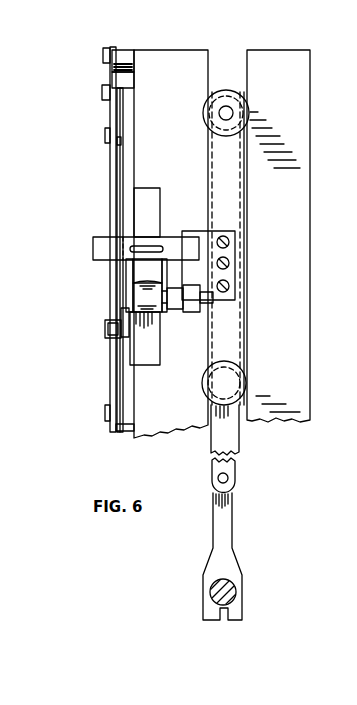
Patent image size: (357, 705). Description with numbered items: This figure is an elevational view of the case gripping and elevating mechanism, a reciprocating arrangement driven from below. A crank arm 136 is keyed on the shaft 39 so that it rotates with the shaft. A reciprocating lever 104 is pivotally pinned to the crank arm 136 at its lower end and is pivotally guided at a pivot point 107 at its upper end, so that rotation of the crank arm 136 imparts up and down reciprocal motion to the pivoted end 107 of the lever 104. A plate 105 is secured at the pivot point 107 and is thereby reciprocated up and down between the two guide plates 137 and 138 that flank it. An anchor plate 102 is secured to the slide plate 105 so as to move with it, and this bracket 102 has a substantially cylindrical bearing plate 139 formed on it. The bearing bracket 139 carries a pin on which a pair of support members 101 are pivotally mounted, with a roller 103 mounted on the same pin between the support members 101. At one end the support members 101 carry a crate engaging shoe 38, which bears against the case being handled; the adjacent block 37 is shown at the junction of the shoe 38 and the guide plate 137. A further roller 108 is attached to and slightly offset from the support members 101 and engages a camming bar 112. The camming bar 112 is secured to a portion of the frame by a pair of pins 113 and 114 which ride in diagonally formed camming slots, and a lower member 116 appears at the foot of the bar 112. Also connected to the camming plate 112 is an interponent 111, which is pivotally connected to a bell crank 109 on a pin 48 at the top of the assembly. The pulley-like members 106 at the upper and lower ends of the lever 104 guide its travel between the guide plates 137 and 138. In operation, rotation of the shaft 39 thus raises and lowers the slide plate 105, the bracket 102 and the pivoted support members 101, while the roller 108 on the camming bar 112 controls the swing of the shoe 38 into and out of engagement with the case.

The block 37 is at (142, 188).
The crate engaging shoe 38 is at (93, 243).
The shaft 39 is at (236, 585).
The pin 48 is at (103, 55).
The support members 101 is at (163, 270).
The anchor plate 102 is at (196, 231).
The roller 103 is at (137, 302).
The reciprocating lever 104 is at (240, 157).
The plate 105 is at (245, 326).
The pulleys 106 is at (218, 108).
The pivot point 107 is at (215, 107).
The roller 108 is at (110, 330).
The bell crank 109 is at (114, 50).
The interponent 111 is at (110, 78).
The camming bar 112 is at (117, 170).
The pin 113 is at (105, 133).
The pin 114 is at (105, 411).
The bottom block 116 is at (123, 432).
The crank arm 136 is at (233, 520).
The guide plate 137 is at (155, 50).
The guide plate 138 is at (286, 50).
The bearing plate 139 is at (195, 312).